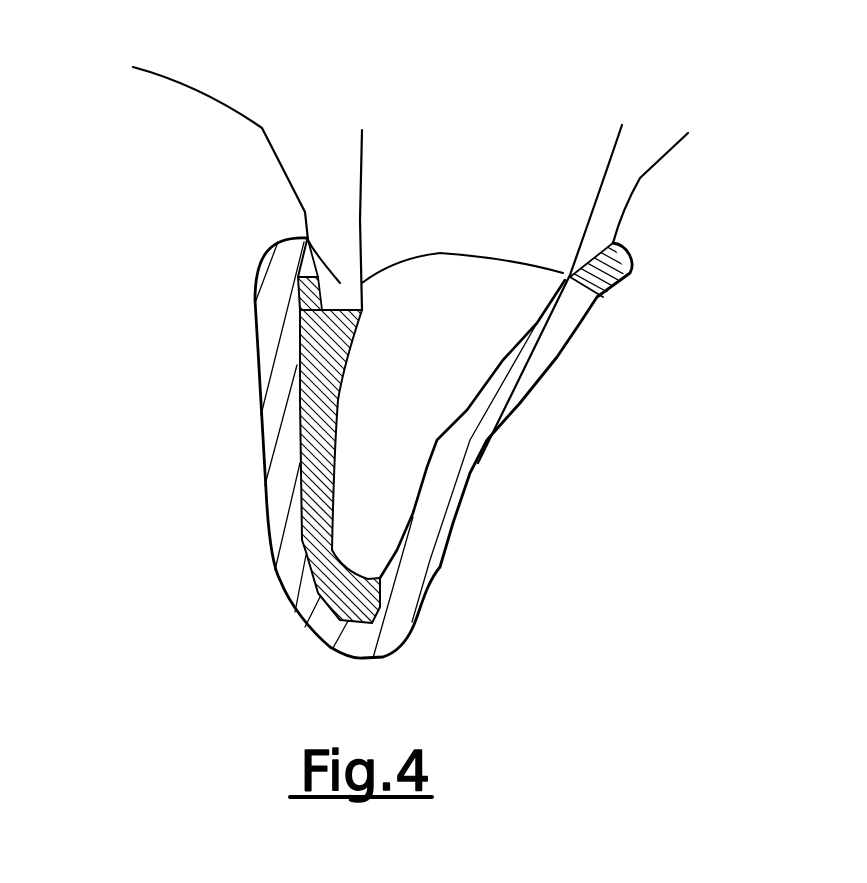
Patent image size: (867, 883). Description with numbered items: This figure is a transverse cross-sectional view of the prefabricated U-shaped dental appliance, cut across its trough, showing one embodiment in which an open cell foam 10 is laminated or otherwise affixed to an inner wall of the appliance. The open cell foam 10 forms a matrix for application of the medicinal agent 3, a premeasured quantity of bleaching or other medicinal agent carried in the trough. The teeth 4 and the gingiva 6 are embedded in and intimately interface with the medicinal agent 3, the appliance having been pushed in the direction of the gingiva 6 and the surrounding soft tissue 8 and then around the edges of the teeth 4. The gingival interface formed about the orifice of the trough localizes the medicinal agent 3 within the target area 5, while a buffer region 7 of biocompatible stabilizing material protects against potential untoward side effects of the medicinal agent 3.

The medicinal agent 3 is at (310, 540).
The teeth 4 is at (467, 350).
The target area 5 is at (322, 410).
The gingiva 6 is at (307, 238).
The buffer region 7 is at (300, 292).
The soft tissue 8 is at (218, 43).
The open cell foam 10 is at (300, 497).